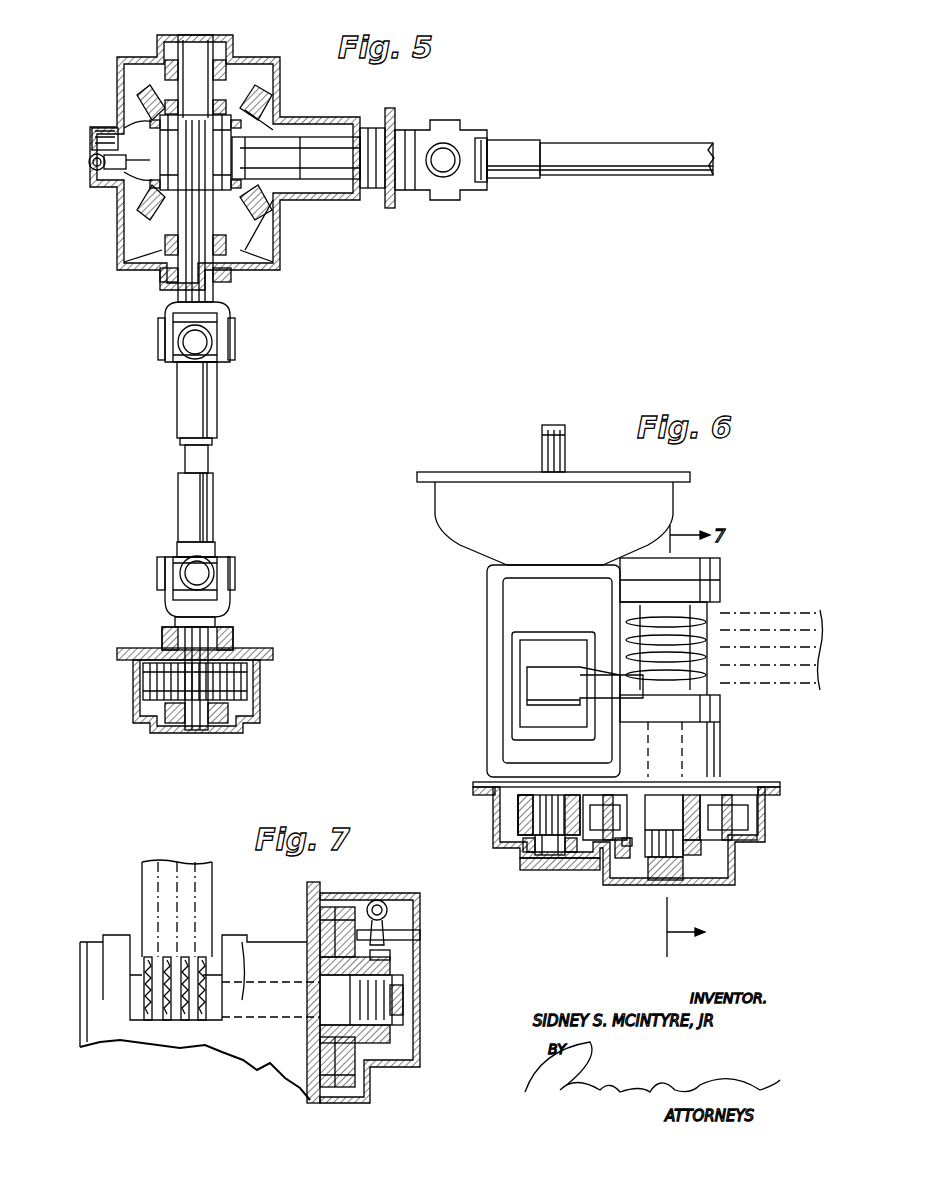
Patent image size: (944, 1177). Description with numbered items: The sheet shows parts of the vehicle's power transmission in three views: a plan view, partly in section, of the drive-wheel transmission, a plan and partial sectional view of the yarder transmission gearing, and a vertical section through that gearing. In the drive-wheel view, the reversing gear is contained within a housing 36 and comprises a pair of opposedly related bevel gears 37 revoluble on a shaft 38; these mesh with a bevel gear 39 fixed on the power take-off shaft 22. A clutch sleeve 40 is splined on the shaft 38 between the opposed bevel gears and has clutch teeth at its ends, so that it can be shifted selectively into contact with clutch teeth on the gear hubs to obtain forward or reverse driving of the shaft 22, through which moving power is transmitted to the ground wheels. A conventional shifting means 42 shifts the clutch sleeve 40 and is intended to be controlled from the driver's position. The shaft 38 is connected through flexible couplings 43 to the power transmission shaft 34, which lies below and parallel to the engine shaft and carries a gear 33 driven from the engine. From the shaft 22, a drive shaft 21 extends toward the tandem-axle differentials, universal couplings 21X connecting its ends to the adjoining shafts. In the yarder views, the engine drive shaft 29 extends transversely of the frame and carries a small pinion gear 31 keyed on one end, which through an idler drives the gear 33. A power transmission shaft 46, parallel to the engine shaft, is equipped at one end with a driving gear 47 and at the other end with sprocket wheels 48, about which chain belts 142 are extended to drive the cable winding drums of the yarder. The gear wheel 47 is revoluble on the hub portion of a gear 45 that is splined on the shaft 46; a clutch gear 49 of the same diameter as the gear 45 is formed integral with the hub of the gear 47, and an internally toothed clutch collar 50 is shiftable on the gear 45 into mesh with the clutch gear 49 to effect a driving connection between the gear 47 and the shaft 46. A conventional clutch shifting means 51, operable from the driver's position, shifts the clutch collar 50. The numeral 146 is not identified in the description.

In FIG. 5, the drive shaft 21 is at (502, 144).
In FIG. 5, the universal couplings 21X is at (440, 195).
In FIG. 5, the power take-off shaft 22 is at (330, 108).
In FIG. 6, the engine drive shaft 29 is at (545, 432).
In FIG. 6, the pinion gear 31 is at (515, 822).
In FIG. 5, the gear 33 is at (150, 672).
In FIG. 5, the power transmission shaft 34 is at (165, 730).
In FIG. 5, the housing 36 is at (280, 256).
In FIG. 5, the bevel gear 37 is at (137, 210).
In FIG. 5, the shaft 38 is at (160, 275).
In FIG. 5, the bevel gear 39 is at (270, 108).
In FIG. 5, the clutch sleeve 40 is at (150, 185).
In FIG. 5, the shifting means 42 is at (90, 164).
In FIG. 5, the flexible couplings 43 is at (183, 352).
In FIG. 6, the gear 45 is at (700, 855).
In FIG. 7, the gear 45 is at (395, 970).
In FIG. 7, the power transmission shaft 46 is at (322, 990).
In FIG. 6, the driving gear 47 is at (750, 812).
In FIG. 7, the driving gear 47 is at (330, 1035).
In FIG. 6, the sprocket wheels 48 is at (705, 645).
In FIG. 7, the sprocket wheels 48 is at (195, 1025).
In FIG. 6, the clutch gear 49 is at (615, 858).
In FIG. 7, the clutch gear 49 is at (368, 1070).
In FIG. 6, the clutch collar 50 is at (625, 850).
In FIG. 7, the clutch collar 50 is at (390, 955).
In FIG. 7, the clutch shifting means 51 is at (385, 925).
In FIG. 6, the chain belts 142 is at (815, 685).
In FIG. 6, the housing 146 is at (715, 770).